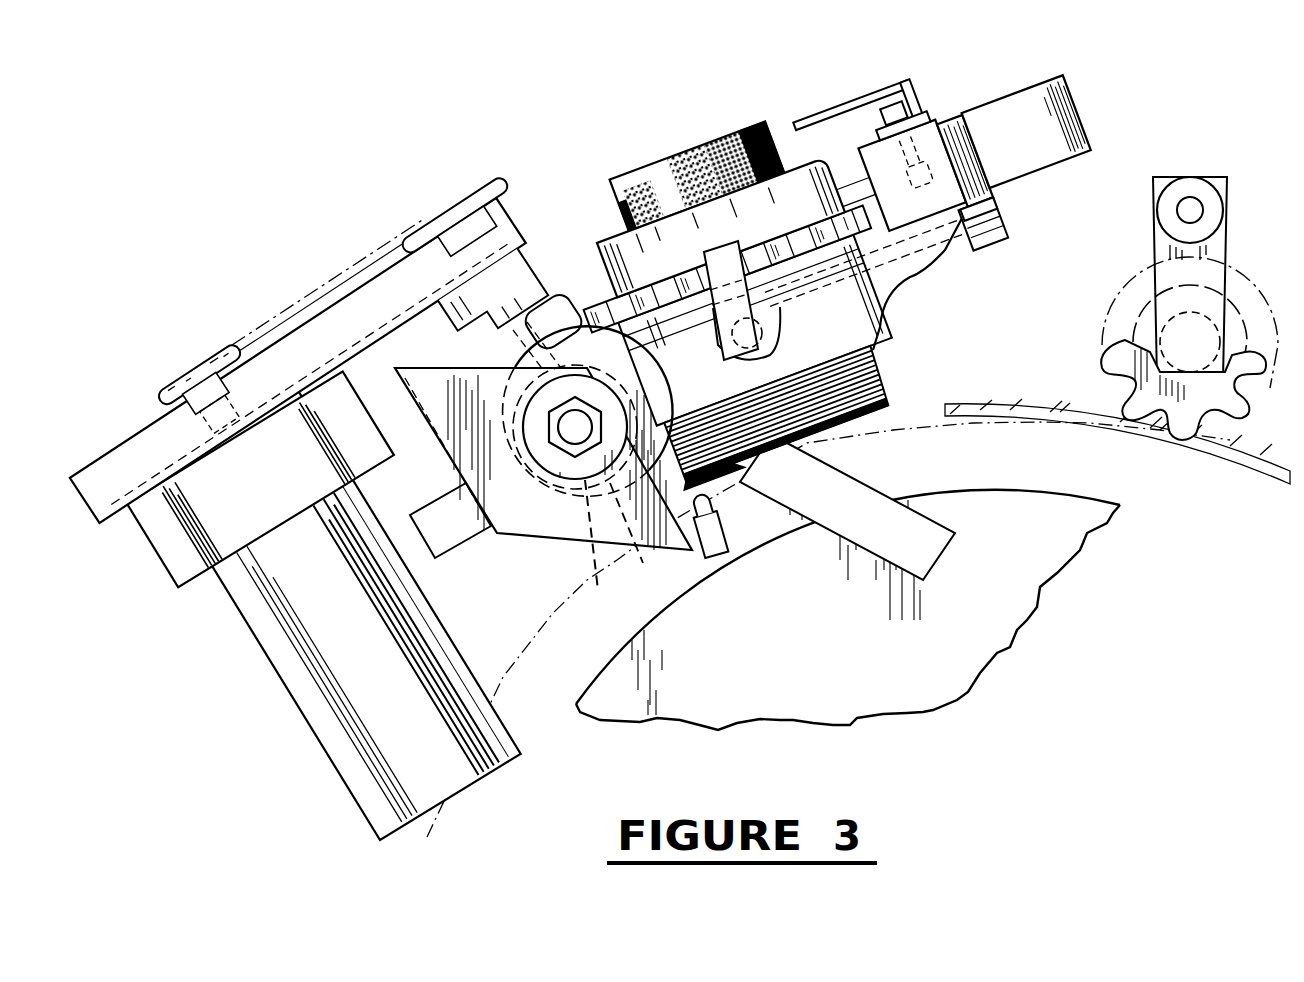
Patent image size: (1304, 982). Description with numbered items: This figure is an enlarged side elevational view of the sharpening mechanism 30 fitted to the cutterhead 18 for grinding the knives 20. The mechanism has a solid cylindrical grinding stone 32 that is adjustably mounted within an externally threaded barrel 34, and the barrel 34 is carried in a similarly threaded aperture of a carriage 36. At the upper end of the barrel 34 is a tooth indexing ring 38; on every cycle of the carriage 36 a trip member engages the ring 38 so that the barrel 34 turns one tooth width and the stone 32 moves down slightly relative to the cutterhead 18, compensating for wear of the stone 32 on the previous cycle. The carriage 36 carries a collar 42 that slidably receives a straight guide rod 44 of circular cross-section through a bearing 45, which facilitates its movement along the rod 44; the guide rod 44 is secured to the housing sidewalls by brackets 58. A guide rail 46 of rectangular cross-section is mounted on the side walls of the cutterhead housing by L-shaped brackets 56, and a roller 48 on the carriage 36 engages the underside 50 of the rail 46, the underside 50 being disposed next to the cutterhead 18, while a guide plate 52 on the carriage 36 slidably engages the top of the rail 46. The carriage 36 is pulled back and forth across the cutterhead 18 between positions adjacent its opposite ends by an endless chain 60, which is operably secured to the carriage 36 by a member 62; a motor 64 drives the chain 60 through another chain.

The cutterhead 18 is at (1090, 494).
The knives 20 is at (870, 545).
The knife grinding or sharpening mechanism 30 is at (665, 135).
The grinding stone 32 is at (745, 128).
The externally threaded barrel 34 is at (882, 368).
The carriage 36 is at (910, 277).
The tooth indexing ring 38 is at (773, 236).
The collar 42 is at (552, 513).
The guide rod 44 is at (603, 548).
The bearing 45 is at (669, 534).
The guide rail 46 is at (960, 122).
The roller 48 is at (993, 242).
The underside of the guide rail 50 is at (993, 200).
The guide plate 52 is at (935, 100).
The L-shaped brackets 56 is at (1036, 85).
The brackets 58 is at (513, 530).
The endless chain 60 is at (533, 282).
The member 62 is at (552, 292).
The motor 64 is at (290, 693).